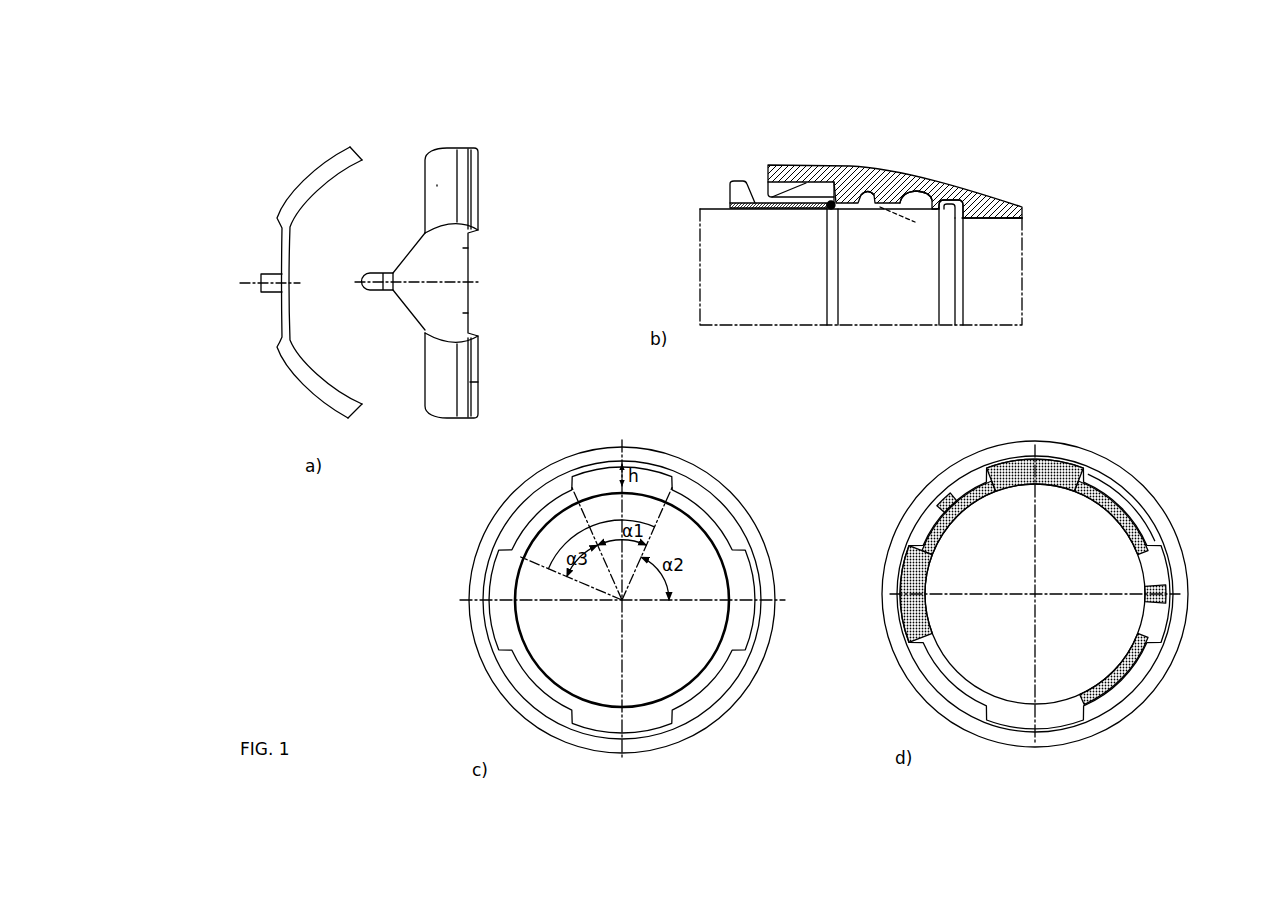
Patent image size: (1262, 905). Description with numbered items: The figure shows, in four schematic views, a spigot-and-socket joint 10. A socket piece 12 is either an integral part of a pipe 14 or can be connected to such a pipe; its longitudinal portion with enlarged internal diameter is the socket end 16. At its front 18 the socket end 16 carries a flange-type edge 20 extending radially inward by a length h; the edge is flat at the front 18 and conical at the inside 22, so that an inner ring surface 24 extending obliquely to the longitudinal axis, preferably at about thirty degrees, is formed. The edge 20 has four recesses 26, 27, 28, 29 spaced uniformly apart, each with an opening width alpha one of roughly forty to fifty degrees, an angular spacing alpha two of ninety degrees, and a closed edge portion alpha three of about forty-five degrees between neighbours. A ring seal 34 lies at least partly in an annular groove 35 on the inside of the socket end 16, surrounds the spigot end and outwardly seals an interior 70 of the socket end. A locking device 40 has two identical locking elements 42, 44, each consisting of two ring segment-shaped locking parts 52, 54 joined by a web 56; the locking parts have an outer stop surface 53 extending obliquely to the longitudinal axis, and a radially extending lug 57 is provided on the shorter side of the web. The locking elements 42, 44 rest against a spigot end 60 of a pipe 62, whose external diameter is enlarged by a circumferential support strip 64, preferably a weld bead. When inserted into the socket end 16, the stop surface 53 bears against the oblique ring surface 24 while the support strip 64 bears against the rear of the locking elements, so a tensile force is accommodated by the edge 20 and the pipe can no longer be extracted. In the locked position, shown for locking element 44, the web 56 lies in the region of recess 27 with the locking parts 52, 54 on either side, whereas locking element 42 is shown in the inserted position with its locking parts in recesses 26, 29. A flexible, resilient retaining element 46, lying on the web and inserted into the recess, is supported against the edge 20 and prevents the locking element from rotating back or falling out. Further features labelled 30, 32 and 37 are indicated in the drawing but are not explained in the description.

The spigot-and-socket joint 10 is at (1036, 135).
The socket piece 12 is at (1007, 196).
The pipe 14 is at (1023, 211).
The socket end 16 is at (824, 167).
The front 18 is at (766, 182).
The flange-type edge 20 is at (752, 181).
The inside 22 is at (808, 167).
The inner ring surface 24 is at (802, 186).
The recess 26 is at (657, 477).
The recess 27 is at (748, 572).
The recess 28 is at (657, 727).
The recess 29 is at (497, 585).
The inner ring 30 is at (623, 462).
The housing 32 is at (745, 603).
The ring seal 34 is at (906, 222).
The annular groove 35 is at (885, 192).
The cavity 37 is at (932, 180).
The locking device 40 is at (506, 191).
The locking element 42 is at (466, 248).
The locking element 44 is at (1162, 600).
The retaining element 46 is at (1165, 556).
The locking part 52 is at (447, 158).
The outer stop surface 53 is at (437, 185).
The locking part 54 is at (470, 382).
The web 56 is at (466, 312).
The lug 57 is at (368, 273).
The spigot end 60 is at (926, 316).
The pipe 62 is at (763, 328).
The support strip 64 is at (829, 318).
The interior 70 is at (1018, 292).